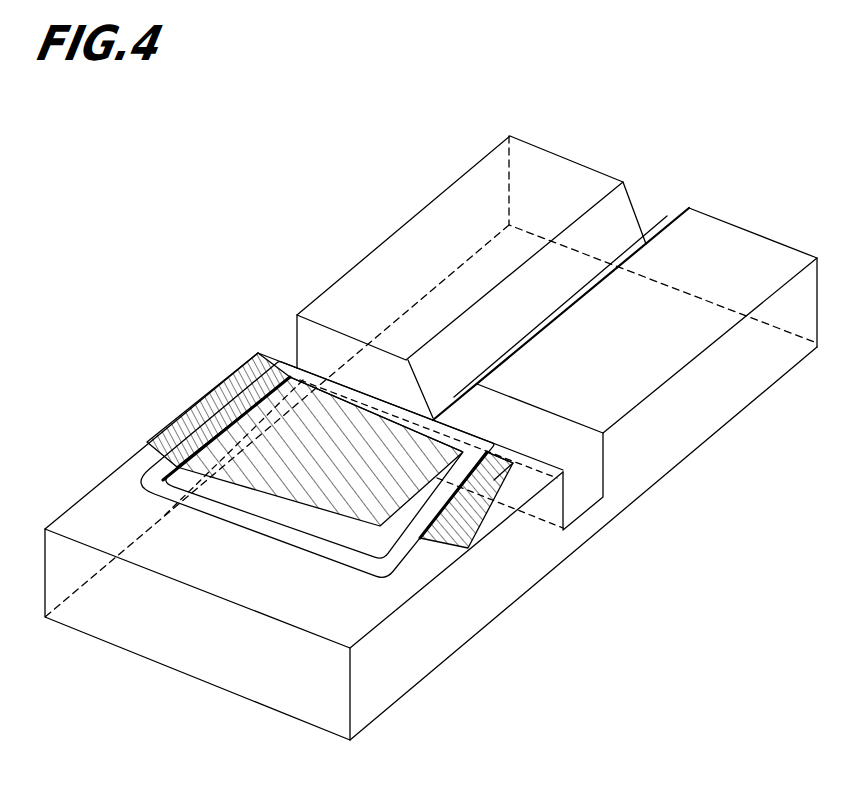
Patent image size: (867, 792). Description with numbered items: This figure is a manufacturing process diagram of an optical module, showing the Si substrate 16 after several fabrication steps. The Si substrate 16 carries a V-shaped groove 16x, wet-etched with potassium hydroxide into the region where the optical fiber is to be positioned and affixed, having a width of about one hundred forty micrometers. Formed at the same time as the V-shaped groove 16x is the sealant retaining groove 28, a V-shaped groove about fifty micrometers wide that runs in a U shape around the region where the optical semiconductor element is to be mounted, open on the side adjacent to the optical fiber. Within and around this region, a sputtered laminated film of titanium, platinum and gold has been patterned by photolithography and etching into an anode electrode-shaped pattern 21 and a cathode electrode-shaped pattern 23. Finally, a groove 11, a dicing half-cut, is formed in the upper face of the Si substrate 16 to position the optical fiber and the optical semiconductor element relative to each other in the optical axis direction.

The Si substrate 16 is at (79, 617).
The groove (dicing half-cut) 11 is at (579, 500).
The V-shaped groove 16x is at (460, 388).
The anode electrode-shaped pattern 21 is at (212, 392).
The cathode electrode-shaped pattern 23 is at (500, 507).
The sealant retaining groove 28 is at (363, 557).